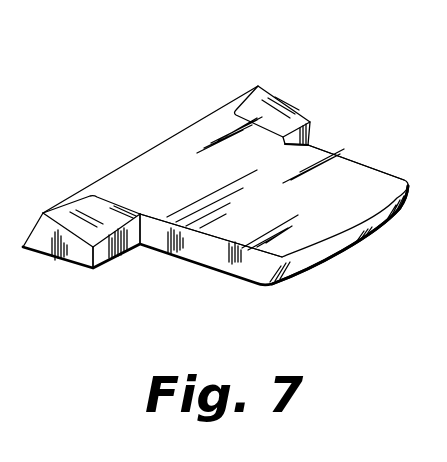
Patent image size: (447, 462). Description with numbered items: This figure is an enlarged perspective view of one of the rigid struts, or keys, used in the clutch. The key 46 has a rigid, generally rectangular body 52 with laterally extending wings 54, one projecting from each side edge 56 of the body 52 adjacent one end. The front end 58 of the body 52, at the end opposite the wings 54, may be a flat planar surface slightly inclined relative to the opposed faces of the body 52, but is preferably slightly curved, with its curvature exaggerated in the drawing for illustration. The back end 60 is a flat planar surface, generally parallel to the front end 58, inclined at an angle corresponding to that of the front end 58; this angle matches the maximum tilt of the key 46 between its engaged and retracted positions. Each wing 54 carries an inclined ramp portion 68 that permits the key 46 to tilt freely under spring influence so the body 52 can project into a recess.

The key 46 is at (228, 84).
The body 52 is at (258, 208).
The wings 54 is at (274, 93).
The side edge 56 is at (352, 162).
The front end 58 is at (363, 242).
The back end 60 is at (28, 230).
The inclined ramp portion 68 is at (292, 118).